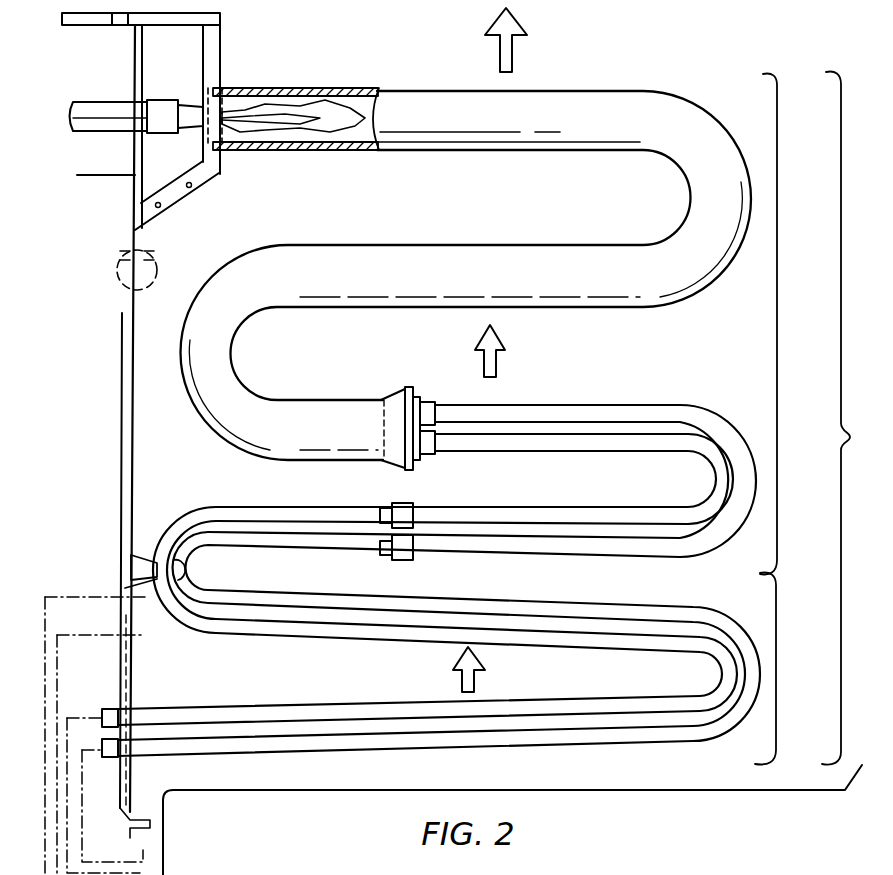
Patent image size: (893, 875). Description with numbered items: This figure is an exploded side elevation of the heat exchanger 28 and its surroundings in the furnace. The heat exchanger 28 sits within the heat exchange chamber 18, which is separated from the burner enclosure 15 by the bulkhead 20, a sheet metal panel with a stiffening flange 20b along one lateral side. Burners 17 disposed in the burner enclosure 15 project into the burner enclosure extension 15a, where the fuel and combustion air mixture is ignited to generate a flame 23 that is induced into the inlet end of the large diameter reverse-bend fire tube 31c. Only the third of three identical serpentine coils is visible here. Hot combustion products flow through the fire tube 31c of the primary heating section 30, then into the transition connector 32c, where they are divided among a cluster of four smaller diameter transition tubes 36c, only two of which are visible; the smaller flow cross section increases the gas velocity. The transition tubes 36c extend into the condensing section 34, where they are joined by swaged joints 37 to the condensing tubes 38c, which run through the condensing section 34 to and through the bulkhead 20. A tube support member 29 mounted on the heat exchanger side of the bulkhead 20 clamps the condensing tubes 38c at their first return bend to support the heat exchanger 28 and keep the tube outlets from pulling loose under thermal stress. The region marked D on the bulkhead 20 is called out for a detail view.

The burner enclosure 15 is at (69, 162).
The burner enclosure extension 15a is at (188, 67).
The burner 17 is at (98, 107).
The flame 23 is at (288, 118).
The heat exchange chamber 18 is at (453, 232).
The fire tube 31c is at (588, 122).
The transition connector 32c is at (413, 388).
The transition tubes 36c is at (610, 443).
The swaged joint 37 is at (395, 504).
The condensing tubes 38c is at (462, 636).
The bulkhead 20 is at (134, 443).
The stiffening flange 20b is at (118, 523).
The tube support member 29 is at (141, 560).
The primary heating section 30 is at (806, 331).
The condensing section 34 is at (783, 668).
The heat exchanger 28 is at (849, 437).
The detail D is at (117, 284).